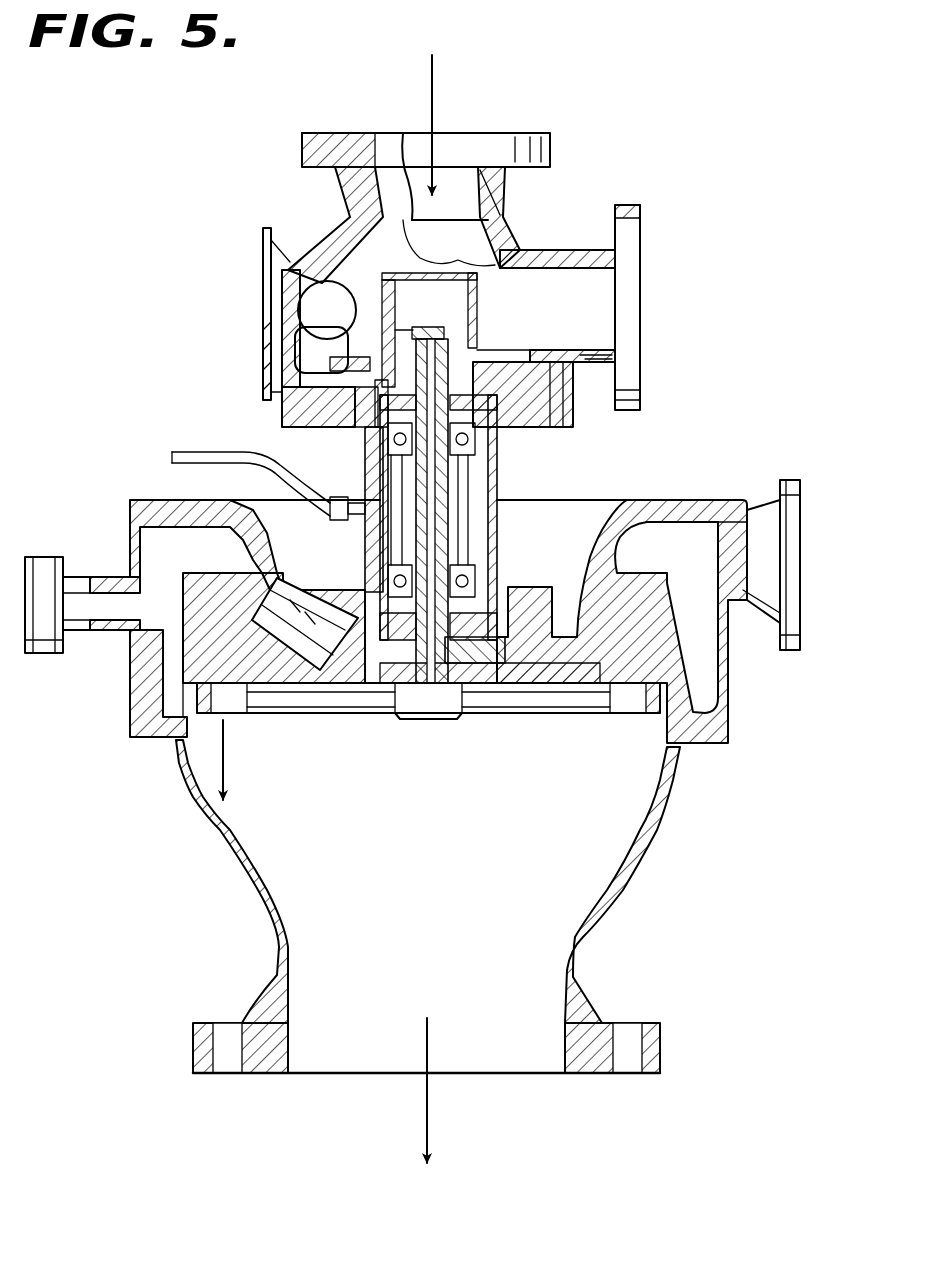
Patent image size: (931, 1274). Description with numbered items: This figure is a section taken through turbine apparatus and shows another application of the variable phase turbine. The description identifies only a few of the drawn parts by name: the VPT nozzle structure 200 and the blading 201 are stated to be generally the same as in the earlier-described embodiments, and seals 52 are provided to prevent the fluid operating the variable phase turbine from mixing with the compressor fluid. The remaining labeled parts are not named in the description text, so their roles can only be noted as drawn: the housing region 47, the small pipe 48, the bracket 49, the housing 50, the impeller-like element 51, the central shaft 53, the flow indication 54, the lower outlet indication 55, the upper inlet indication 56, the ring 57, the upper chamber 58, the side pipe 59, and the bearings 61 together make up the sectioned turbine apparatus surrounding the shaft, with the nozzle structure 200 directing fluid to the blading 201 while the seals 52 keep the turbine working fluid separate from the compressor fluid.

The pump housing 47 is at (457, 353).
The lubricant pipe 48 is at (183, 452).
The bearing bracket 49 is at (378, 497).
The bearing housing 50 is at (475, 415).
The impeller 51 is at (370, 640).
The seals 52 is at (390, 381).
The shaft 53 is at (433, 505).
The flow direction 54 is at (220, 740).
The outlet flow 55 is at (428, 1100).
The inlet flow 56 is at (436, 95).
The seal ring 57 is at (345, 367).
The upper pump chamber 58 is at (327, 297).
The discharge pipe 59 is at (580, 275).
The ball bearings 61 is at (457, 522).
The VPT nozzle structure 200 is at (275, 636).
The blading 201 is at (621, 725).